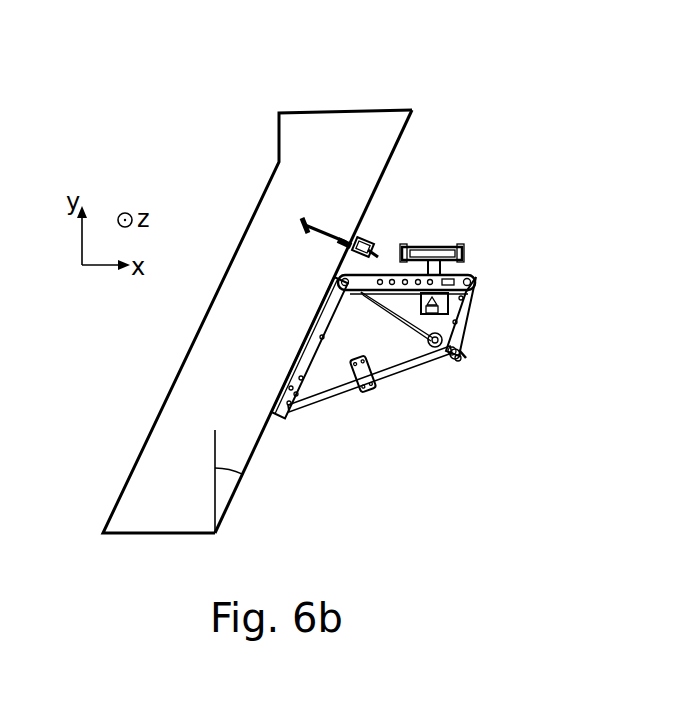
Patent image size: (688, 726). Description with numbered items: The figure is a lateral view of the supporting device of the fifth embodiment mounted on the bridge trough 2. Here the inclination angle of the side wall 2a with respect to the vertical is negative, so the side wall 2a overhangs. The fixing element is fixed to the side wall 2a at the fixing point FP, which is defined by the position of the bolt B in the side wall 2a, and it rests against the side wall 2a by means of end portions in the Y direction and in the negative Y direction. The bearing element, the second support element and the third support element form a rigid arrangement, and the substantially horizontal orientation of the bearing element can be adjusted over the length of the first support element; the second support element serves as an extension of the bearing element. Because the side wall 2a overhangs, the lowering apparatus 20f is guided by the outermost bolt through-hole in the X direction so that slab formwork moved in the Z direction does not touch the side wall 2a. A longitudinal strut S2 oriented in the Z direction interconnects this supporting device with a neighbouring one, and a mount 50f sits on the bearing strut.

The bridge trough 2 is at (332, 137).
The side wall 2a is at (403, 138).
The bolt B is at (325, 233).
The fixing point FP is at (368, 233).
The lowering apparatus 20f is at (425, 316).
The sensor mount 50f is at (432, 246).
The longitudinal strut S2 is at (458, 359).